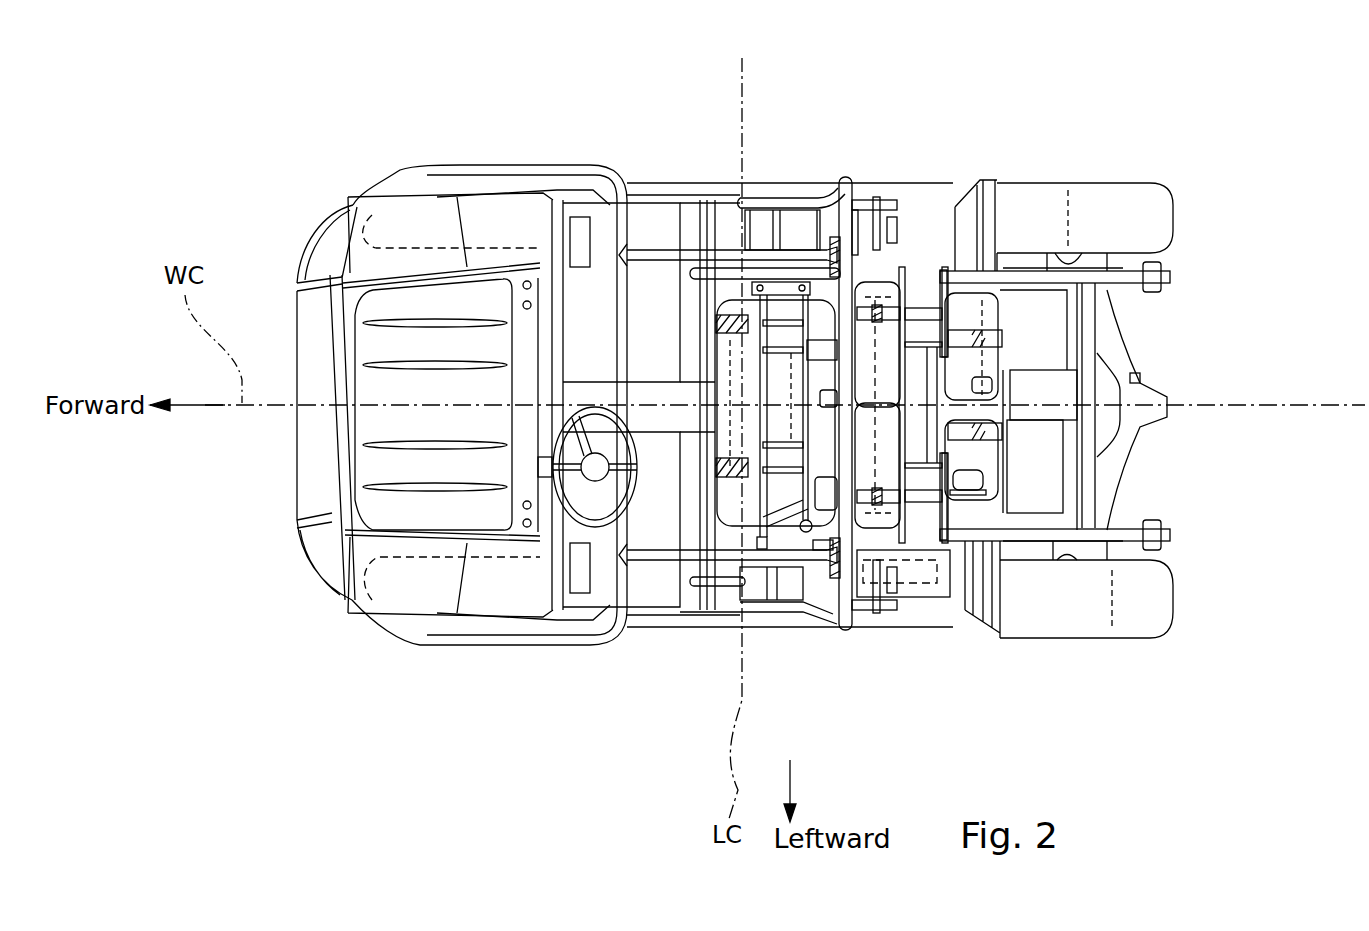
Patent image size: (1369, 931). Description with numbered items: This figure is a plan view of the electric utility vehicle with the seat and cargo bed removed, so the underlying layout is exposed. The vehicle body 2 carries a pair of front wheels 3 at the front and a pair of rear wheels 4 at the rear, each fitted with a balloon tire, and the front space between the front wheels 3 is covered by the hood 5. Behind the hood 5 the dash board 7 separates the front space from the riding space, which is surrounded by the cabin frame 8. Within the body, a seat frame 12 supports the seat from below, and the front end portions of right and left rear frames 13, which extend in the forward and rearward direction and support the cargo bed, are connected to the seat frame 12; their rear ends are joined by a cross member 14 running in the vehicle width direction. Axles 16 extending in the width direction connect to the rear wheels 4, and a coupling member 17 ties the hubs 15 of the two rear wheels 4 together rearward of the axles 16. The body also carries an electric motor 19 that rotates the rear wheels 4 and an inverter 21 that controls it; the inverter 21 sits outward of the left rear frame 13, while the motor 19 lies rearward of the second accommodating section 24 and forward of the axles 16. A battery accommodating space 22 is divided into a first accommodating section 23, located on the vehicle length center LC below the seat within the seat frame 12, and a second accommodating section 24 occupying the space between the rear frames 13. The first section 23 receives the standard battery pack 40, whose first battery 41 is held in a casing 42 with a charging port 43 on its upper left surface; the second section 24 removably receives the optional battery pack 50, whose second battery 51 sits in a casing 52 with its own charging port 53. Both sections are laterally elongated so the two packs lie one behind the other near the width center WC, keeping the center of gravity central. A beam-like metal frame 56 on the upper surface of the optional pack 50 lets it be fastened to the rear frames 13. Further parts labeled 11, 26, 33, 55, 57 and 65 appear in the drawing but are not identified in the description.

The vehicle body 2 is at (620, 615).
The front wheels 3 is at (413, 168).
The rear wheels 4 is at (1160, 220).
The hood 5 is at (375, 428).
The dash board 7 is at (563, 367).
The cabin frame 8 is at (648, 250).
The frame member 11 is at (688, 640).
The seat frame 12 is at (700, 183).
The rear frames 13 is at (1117, 250).
The cross member 14 is at (1090, 560).
The hubs 15 is at (1068, 253).
The axles 16 is at (1073, 316).
The coupling member 17 is at (1100, 310).
The electric motor 19 is at (1037, 552).
The inverter 21 is at (906, 600).
The battery accommodating space 22 is at (903, 78).
The first accommodating section 23 is at (727, 215).
The second accommodating section 24 is at (852, 250).
The housing 26 is at (1057, 397).
The arm 33 is at (880, 490).
The standard battery pack 40 is at (808, 283).
The first battery 41 is at (790, 283).
The casing 42 is at (708, 500).
The charging port 43 is at (786, 575).
The optional battery pack 50 is at (975, 292).
The second battery 51 is at (922, 268).
The casing 52 is at (924, 598).
The charging port 53 is at (965, 525).
The bracket 55 is at (988, 500).
The metal frame 56 is at (897, 212).
The connecting direction 57 is at (1001, 303).
The pin 65 is at (890, 598).